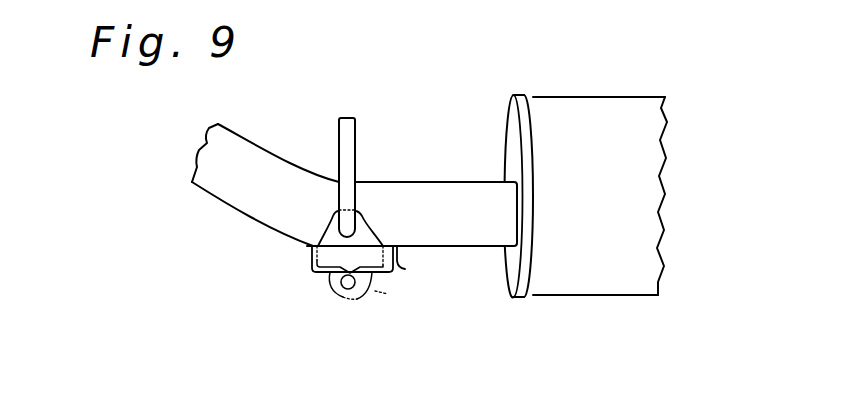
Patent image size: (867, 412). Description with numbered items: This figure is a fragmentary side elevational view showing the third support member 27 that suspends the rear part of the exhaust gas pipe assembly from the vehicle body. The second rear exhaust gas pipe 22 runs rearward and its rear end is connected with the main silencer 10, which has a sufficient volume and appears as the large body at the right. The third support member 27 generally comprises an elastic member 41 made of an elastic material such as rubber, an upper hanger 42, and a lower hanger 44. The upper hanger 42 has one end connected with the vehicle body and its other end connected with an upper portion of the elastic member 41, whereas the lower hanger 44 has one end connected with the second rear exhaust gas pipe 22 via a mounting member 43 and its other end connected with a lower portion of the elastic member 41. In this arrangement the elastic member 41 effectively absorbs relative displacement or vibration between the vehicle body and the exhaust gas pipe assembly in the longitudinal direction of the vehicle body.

The main silencer 10 is at (588, 282).
The second rear exhaust gas pipe 22 is at (456, 189).
The third support member 27 is at (311, 285).
The elastic member 41 is at (390, 295).
The upper hanger 42 is at (355, 131).
The mounting member 43 is at (405, 269).
The lower hanger 44 is at (338, 293).